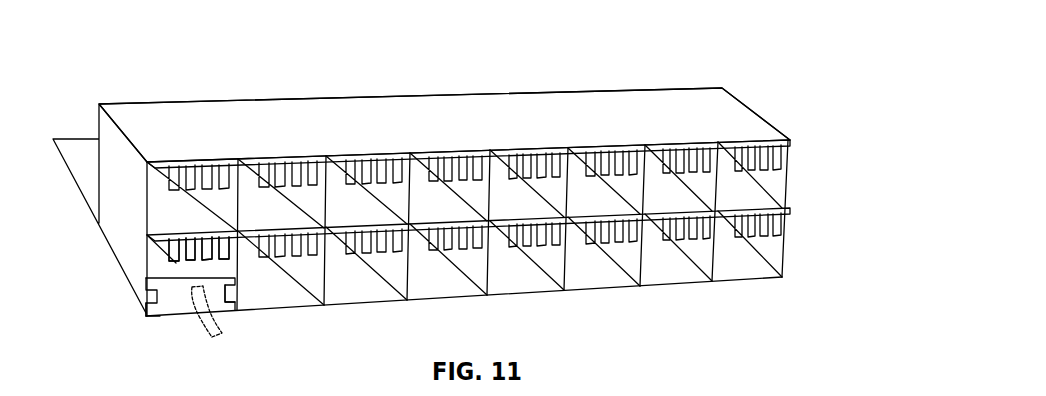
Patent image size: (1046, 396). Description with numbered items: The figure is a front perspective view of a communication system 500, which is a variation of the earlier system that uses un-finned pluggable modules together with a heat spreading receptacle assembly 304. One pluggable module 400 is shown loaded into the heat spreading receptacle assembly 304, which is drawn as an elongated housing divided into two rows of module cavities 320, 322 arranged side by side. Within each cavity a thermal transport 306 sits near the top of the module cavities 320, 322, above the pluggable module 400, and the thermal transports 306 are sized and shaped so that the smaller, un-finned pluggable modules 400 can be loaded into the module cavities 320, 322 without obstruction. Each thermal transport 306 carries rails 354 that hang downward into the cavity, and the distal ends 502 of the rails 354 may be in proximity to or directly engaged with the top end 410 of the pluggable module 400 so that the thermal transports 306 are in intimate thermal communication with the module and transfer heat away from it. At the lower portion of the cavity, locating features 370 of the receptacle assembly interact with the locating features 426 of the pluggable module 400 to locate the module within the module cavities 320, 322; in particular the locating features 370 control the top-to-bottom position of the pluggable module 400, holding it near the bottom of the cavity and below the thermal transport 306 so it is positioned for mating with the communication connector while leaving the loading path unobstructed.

The communication system 500 is at (176, 84).
The heat spreading receptacle assembly 304 is at (302, 124).
The thermal transport 306 is at (383, 163).
The module cavity 322 is at (778, 185).
The module cavity 320 is at (760, 274).
The rail 354 is at (163, 260).
The top end 410 is at (153, 280).
The locating feature 370 is at (148, 313).
The locating feature 426 is at (163, 320).
The pluggable module 400 is at (221, 306).
The distal end 502 is at (188, 268).